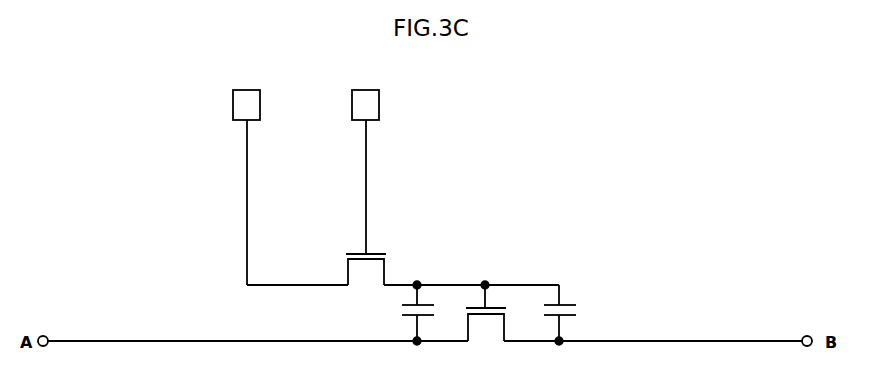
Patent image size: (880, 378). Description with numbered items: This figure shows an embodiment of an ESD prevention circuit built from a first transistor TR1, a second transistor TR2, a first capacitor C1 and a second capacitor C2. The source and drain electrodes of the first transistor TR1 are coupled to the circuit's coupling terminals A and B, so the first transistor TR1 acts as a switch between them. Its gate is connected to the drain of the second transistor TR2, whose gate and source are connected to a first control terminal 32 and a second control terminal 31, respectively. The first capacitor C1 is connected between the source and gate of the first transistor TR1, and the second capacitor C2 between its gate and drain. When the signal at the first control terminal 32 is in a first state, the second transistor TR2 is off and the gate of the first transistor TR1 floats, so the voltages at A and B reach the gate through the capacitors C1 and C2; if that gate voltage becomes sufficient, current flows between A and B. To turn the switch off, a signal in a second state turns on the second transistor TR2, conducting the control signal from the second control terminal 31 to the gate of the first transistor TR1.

The second control terminal 31 is at (260, 93).
The first control terminal 32 is at (379, 93).
The first transistor TR1 is at (490, 314).
The second transistor TR2 is at (367, 265).
The first capacitor C1 is at (407, 313).
The second capacitor C2 is at (576, 313).